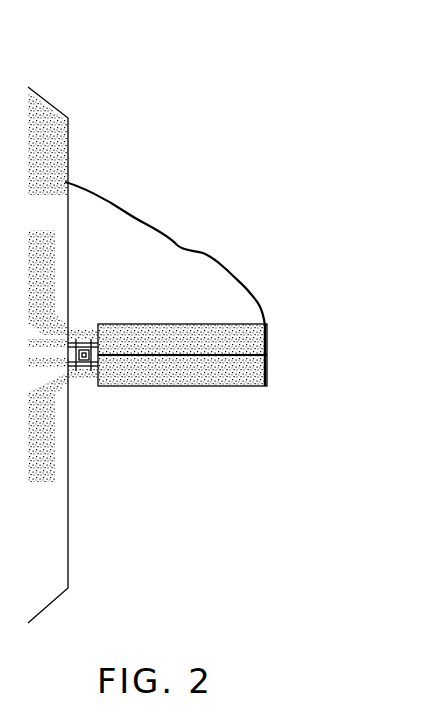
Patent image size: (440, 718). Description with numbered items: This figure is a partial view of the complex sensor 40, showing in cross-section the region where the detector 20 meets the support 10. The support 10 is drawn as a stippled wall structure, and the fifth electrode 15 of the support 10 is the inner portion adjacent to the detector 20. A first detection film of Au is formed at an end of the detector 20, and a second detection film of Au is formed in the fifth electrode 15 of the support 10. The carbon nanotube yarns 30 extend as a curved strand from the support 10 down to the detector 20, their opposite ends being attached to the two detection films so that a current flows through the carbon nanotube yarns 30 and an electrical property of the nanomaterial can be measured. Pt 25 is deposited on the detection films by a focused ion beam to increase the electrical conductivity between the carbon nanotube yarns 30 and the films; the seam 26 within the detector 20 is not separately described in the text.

The support 10 is at (54, 94).
The fifth electrode 15 is at (52, 146).
The detector 20 is at (244, 401).
The Pt 25 is at (267, 344).
The fastener joint 26 is at (200, 356).
The carbon nanotube yarns 30 is at (160, 230).
The complex sensor 40 is at (296, 223).